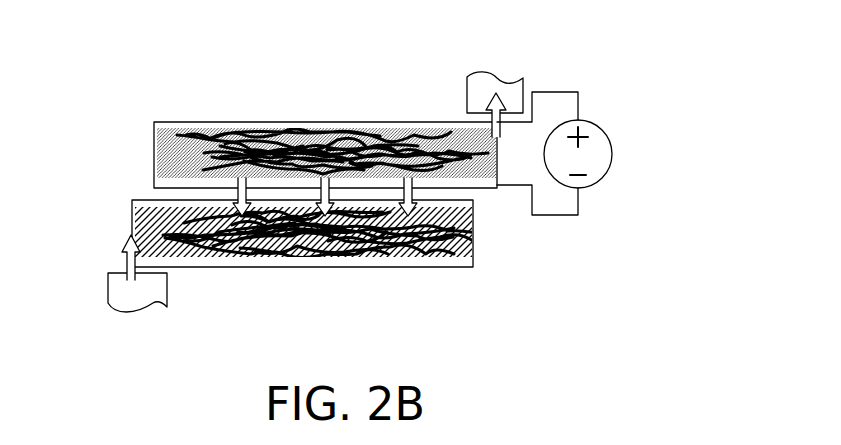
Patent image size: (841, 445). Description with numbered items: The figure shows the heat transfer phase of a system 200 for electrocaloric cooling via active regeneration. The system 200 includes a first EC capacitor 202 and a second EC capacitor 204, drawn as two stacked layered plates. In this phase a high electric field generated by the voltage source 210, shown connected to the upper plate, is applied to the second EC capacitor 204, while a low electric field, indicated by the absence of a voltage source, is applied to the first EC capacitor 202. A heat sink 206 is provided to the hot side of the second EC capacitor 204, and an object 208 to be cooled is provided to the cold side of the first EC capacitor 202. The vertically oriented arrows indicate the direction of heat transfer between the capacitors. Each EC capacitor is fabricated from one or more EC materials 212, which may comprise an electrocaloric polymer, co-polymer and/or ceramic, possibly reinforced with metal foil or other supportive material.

The system 200 is at (226, 104).
The first EC capacitor 202 is at (335, 268).
The second EC capacitor 204 is at (332, 122).
The heat sink 206 is at (495, 82).
The object to be cooled 208 is at (138, 312).
The voltage source 210 is at (612, 155).
The EC materials 212 is at (132, 223).